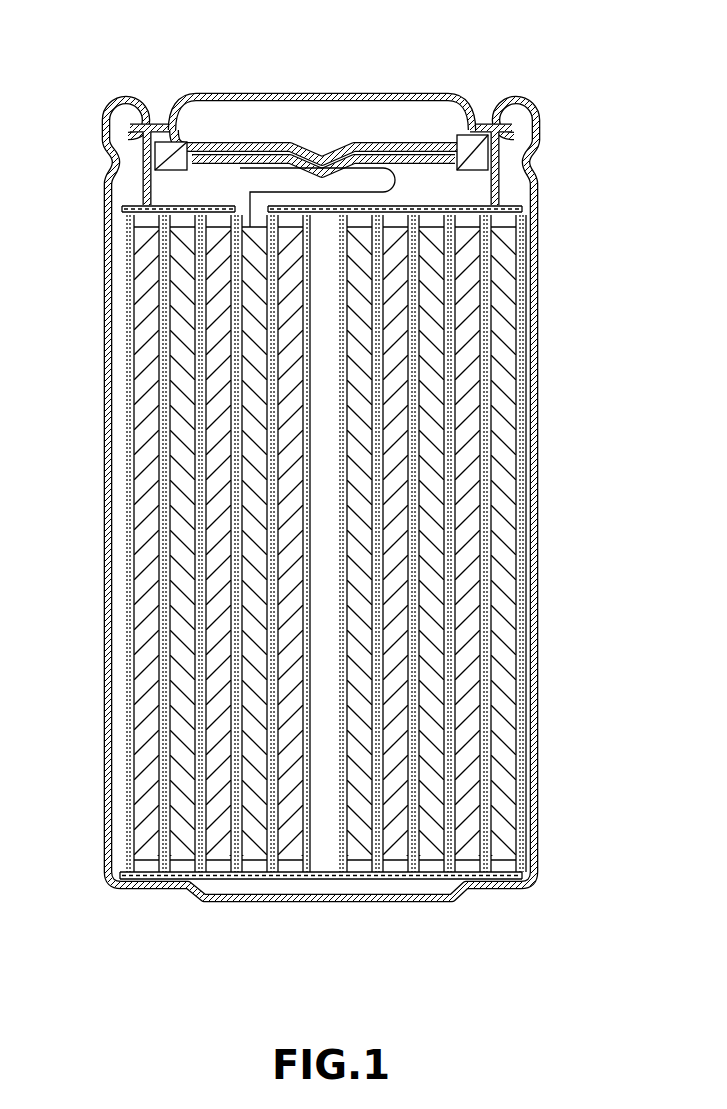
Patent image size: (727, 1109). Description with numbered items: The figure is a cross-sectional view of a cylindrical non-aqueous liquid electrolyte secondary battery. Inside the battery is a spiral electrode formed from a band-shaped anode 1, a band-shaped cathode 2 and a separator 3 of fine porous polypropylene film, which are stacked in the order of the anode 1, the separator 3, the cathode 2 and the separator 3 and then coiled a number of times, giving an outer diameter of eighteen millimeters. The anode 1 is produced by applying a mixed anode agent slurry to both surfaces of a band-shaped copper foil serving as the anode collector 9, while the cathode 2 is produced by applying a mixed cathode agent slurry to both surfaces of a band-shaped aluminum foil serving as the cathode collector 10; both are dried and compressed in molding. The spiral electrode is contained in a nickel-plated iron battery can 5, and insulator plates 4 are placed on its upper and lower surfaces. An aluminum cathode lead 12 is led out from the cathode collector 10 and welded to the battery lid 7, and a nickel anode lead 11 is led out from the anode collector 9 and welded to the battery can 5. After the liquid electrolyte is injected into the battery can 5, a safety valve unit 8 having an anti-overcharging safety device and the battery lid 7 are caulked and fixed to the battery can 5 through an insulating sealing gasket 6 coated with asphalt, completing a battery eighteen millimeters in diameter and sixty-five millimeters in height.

The anode 1 is at (520, 288).
The cathode 2 is at (470, 392).
The separator 3 is at (490, 540).
The insulator plates 4 is at (536, 892).
The battery can 5 is at (104, 347).
The insulating sealing gasket 6 is at (112, 108).
The battery lid 7 is at (330, 95).
The safety valve unit 8 is at (240, 141).
The anode collector 9 is at (137, 553).
The cathode collector 10 is at (178, 708).
The anode lead 11 is at (196, 897).
The cathode lead 12 is at (423, 142).